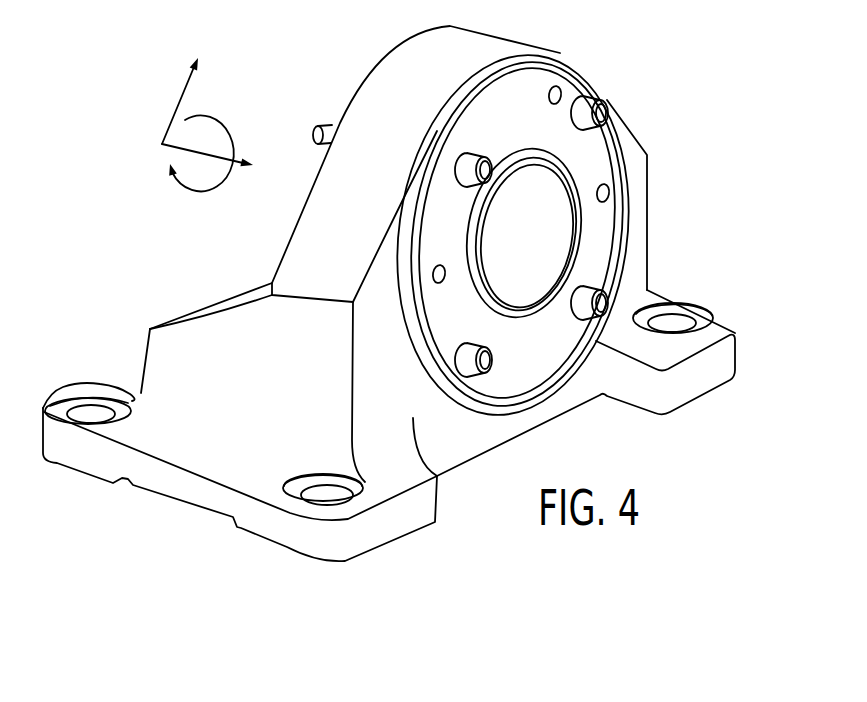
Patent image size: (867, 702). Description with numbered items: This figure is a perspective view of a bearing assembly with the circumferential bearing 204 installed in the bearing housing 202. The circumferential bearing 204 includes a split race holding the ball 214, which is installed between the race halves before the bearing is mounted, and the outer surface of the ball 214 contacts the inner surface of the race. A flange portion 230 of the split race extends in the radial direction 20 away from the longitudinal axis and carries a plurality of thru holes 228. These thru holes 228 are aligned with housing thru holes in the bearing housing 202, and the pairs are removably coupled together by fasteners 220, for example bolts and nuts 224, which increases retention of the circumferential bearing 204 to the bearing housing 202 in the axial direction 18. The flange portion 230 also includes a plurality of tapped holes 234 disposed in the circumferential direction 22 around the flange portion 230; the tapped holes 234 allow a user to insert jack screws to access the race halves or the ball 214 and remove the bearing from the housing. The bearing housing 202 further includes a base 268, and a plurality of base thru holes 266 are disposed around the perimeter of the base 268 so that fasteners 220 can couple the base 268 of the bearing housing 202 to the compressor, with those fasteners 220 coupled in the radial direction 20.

The axial direction 18 is at (182, 150).
The radial direction 20 is at (177, 106).
The circumferential direction 22 is at (211, 191).
The bearing housing 202 is at (418, 50).
The circumferential bearing 204 is at (672, 218).
The ball 214 is at (546, 250).
The fasteners 220 is at (362, 508).
The nuts 224 is at (313, 133).
The thru holes 228 is at (602, 115).
The flange portion 230 is at (556, 68).
The tapped holes 234 is at (559, 88).
The base thru holes 266 is at (354, 540).
The base 268 is at (177, 498).